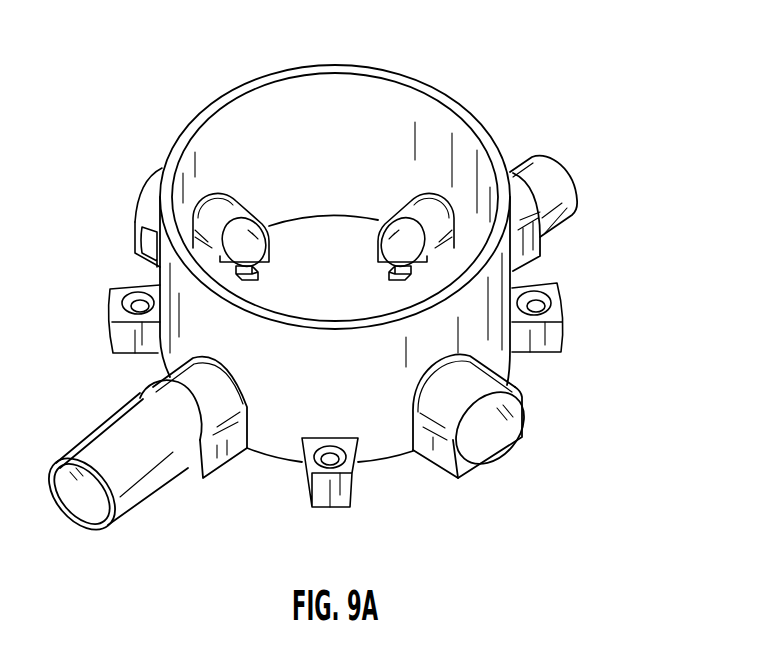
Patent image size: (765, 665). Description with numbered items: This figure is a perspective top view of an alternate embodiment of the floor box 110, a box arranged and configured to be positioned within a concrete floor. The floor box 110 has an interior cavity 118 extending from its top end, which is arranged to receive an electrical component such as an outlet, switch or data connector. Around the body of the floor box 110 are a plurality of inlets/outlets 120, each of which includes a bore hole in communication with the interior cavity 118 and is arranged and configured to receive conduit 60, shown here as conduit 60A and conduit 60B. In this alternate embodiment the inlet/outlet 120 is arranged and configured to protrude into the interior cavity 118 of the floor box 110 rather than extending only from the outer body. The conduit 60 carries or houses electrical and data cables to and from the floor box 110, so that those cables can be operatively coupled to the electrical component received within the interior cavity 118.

The floor box 110 is at (478, 288).
The interior cavity 118 is at (300, 100).
The inlet/outlet 120 is at (520, 388).
The conduit 60 is at (355, 336).
The conduit 60A is at (120, 510).
The conduit 60B is at (562, 157).